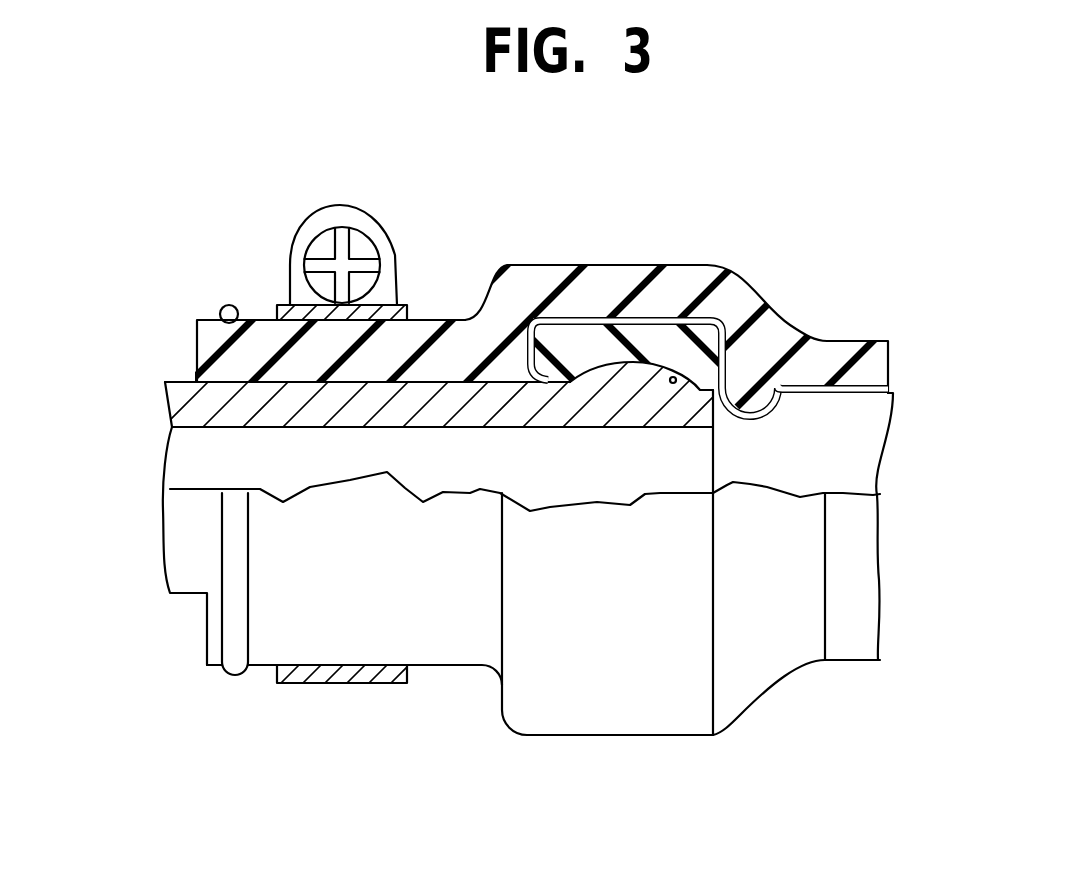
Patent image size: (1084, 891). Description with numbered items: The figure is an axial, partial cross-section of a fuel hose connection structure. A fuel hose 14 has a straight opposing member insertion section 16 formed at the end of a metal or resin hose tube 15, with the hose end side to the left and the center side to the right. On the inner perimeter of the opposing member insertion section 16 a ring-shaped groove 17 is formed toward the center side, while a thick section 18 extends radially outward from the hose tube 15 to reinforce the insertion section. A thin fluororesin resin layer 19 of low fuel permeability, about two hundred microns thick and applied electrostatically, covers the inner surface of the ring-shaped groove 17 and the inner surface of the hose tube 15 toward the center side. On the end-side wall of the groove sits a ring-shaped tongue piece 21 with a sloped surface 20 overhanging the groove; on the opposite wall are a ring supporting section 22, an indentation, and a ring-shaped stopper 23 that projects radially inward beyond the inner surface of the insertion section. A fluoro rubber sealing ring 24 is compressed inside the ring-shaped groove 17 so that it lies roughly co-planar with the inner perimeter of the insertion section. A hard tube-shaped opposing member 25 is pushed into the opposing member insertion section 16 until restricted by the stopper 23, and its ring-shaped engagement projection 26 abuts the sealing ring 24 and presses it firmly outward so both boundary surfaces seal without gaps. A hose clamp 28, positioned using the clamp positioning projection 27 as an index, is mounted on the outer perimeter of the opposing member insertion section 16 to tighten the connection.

The fuel hose 14 is at (773, 260).
The hose tube 15 is at (868, 343).
The opposing member insertion section 16 is at (423, 342).
The ring-shaped groove 17 is at (630, 317).
The thick section 18 is at (512, 287).
The resin layer 19 is at (846, 395).
The sloped surface 20 is at (571, 320).
The tongue piece 21 is at (528, 374).
The ring supporting section 22 is at (732, 334).
The stopper 23 is at (781, 400).
The sealing ring 24 is at (633, 353).
The opposing member 25 is at (180, 390).
The engagement projection 26 is at (676, 378).
The clamp positioning projection 27 is at (229, 306).
The hose clamp 28 is at (332, 222).